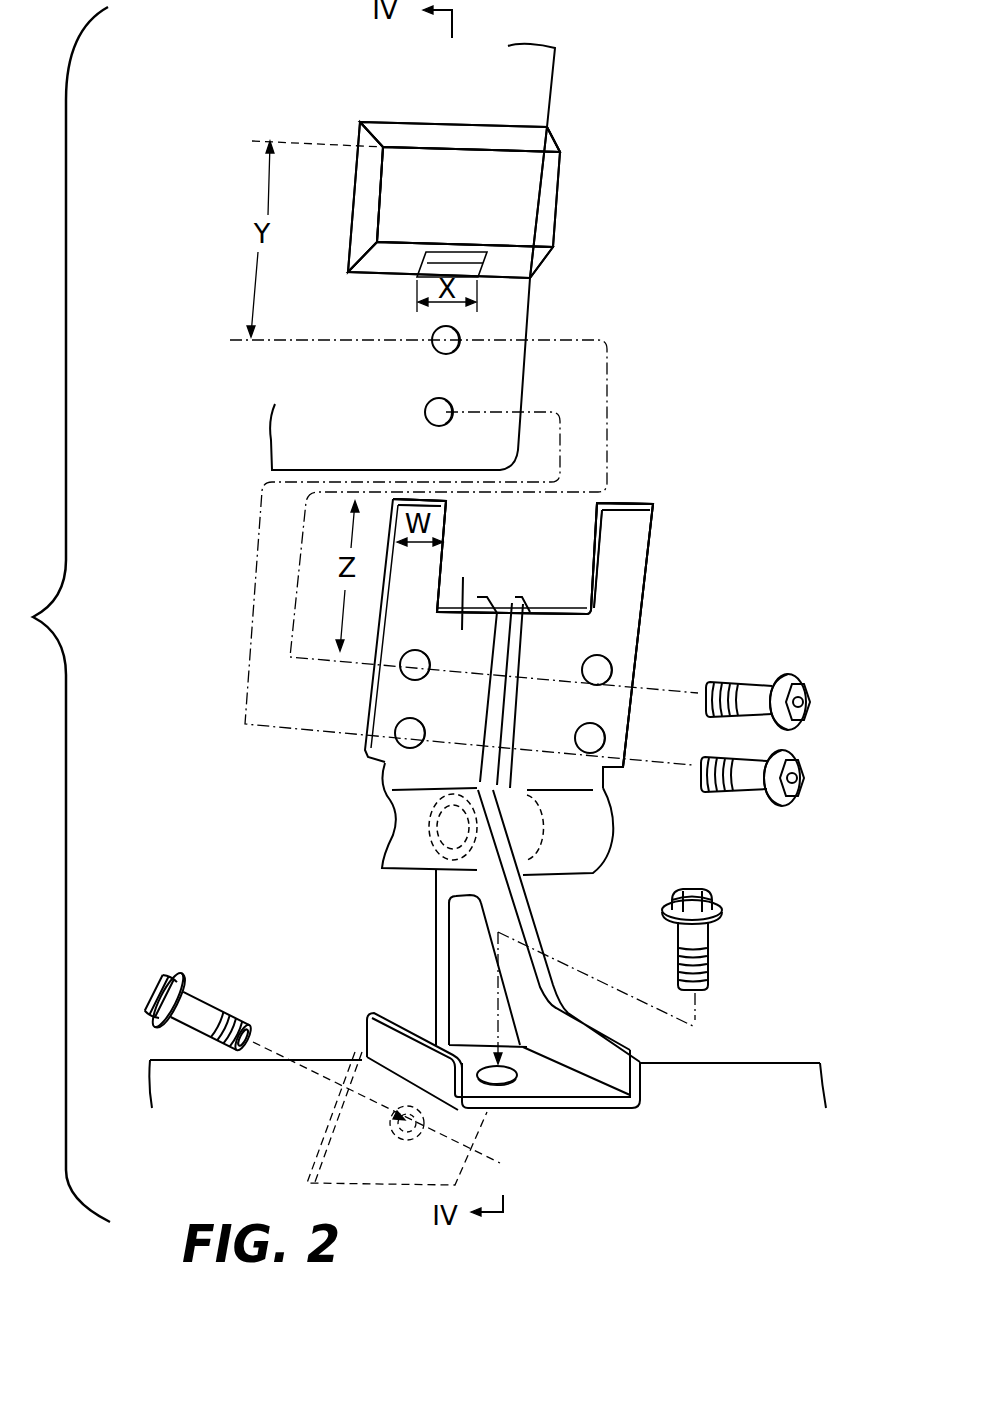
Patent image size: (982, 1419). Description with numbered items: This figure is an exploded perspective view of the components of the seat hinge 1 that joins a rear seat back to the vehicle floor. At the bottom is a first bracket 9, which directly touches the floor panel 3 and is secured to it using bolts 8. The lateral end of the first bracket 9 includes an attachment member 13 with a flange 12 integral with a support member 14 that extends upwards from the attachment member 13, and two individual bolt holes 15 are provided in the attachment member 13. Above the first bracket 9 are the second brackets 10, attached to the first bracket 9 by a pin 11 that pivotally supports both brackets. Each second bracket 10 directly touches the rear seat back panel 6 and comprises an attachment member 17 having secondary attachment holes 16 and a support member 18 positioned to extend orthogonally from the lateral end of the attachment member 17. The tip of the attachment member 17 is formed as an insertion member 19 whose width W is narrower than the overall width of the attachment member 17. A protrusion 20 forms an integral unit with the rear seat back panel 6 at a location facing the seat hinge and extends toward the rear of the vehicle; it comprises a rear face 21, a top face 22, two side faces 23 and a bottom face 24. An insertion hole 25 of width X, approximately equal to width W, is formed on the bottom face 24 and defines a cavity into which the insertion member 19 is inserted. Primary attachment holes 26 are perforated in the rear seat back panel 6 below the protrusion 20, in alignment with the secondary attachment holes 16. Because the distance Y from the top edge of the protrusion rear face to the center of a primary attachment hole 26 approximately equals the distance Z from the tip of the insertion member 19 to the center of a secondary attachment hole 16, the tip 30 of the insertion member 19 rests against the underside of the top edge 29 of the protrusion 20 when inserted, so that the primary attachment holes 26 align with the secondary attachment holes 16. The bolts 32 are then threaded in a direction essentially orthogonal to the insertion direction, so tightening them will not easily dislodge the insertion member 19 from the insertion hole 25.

The seat hinge 1 is at (685, 511).
The floor panel 3 is at (760, 1062).
The rear seat back panel 6 is at (565, 96).
The bolts 8 is at (703, 893).
The first bracket 9 is at (398, 978).
The second brackets 10 is at (655, 622).
The pin 11 is at (423, 827).
The flange 12 is at (373, 1037).
The attachment member 13 is at (570, 1083).
The support member 14 is at (508, 945).
The bolt holes 15 is at (510, 1082).
The secondary attachment holes 16 is at (582, 727).
The attachment member 17 is at (530, 597).
The support member 18 is at (512, 732).
The insertion member 19 is at (625, 517).
The protrusion 20 is at (454, 200).
The rear face 21 is at (545, 208).
The top face 22 is at (448, 128).
The side faces 23 is at (362, 184).
The bottom face 24 is at (380, 258).
The insertion hole 25 is at (465, 263).
The primary attachment holes 26 is at (425, 416).
The top edge 29 is at (562, 146).
The tip 30 is at (612, 498).
The bolts 32 is at (803, 772).